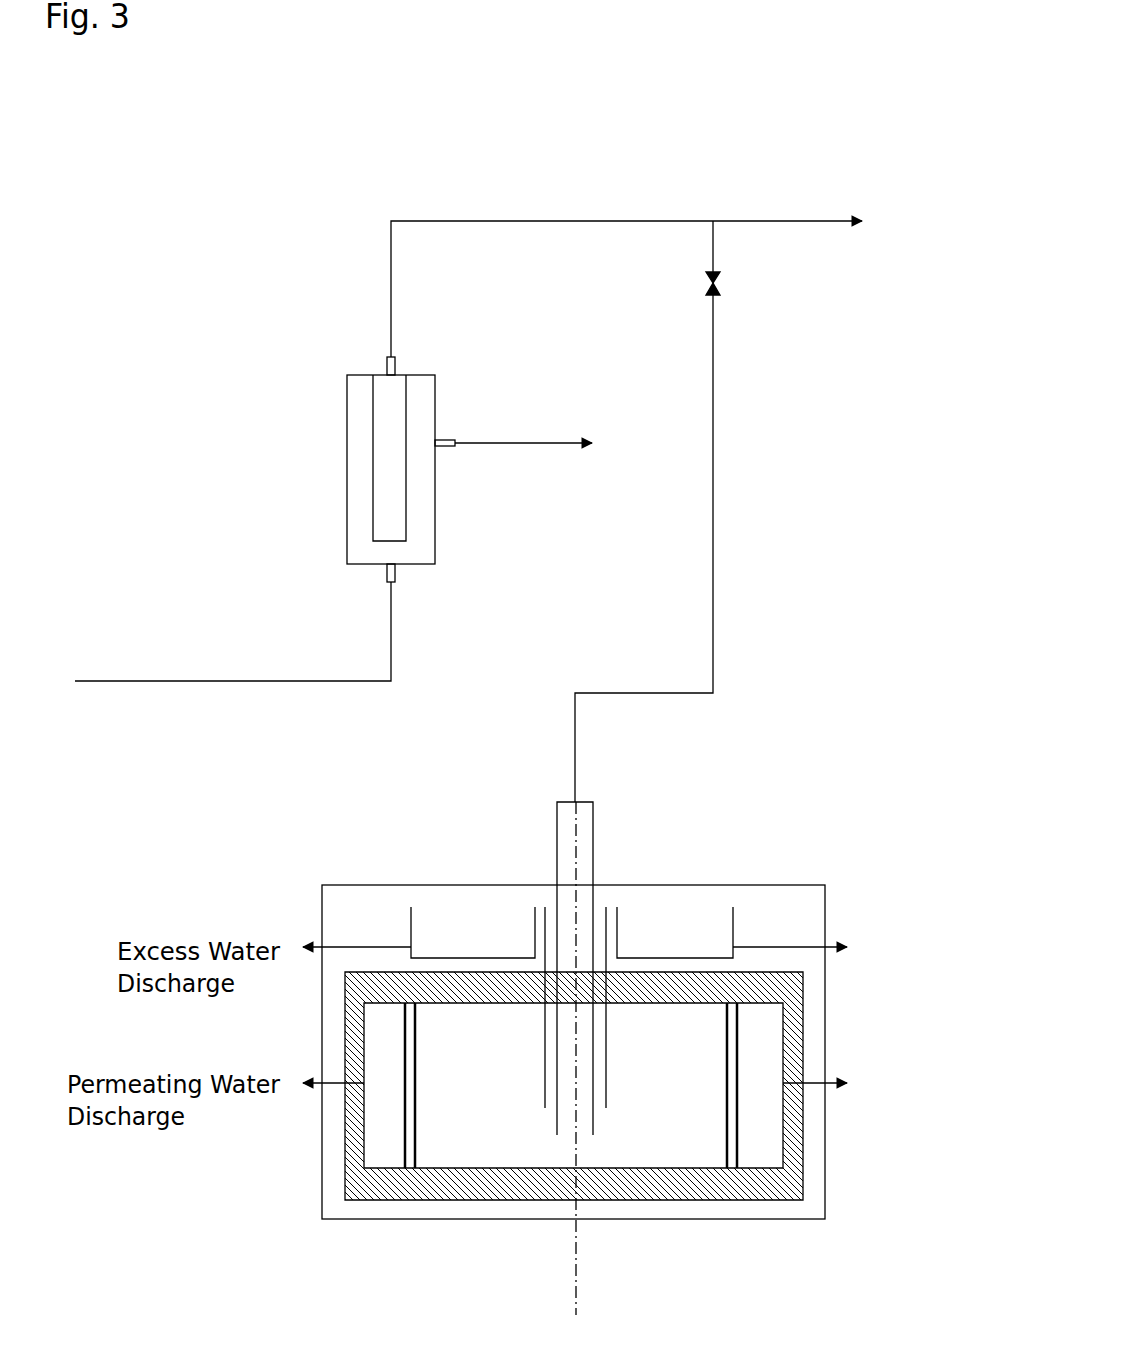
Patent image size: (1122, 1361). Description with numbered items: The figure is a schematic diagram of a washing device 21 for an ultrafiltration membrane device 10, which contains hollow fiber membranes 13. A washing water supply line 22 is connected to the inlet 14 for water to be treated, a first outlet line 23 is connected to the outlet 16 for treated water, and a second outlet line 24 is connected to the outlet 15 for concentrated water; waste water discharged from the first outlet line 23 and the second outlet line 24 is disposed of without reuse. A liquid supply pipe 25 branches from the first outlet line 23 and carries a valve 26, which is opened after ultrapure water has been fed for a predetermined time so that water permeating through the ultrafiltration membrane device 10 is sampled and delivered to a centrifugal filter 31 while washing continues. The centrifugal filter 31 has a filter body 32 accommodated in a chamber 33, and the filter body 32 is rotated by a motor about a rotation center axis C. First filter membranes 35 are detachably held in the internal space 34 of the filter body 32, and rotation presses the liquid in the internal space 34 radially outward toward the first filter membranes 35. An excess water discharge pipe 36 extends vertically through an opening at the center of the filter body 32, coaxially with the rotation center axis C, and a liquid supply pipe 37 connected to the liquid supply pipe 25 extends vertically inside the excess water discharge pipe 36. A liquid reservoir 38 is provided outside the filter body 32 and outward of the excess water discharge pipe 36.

The ultrafiltration membrane device 10 is at (353, 466).
The hollow fiber membrane 13 is at (383, 405).
The inlet for water to be treated 14 is at (398, 578).
The outlet for concentrated water 15 is at (447, 447).
The outlet for treated water 16 is at (398, 366).
The washing device 21 is at (252, 310).
The washing water supply line 22 is at (265, 680).
The first outlet line 23 is at (565, 220).
The second outlet line 24 is at (516, 447).
The liquid supply pipe 25 is at (715, 372).
The valve 26 is at (718, 286).
The centrifugal filter 31 is at (746, 822).
The filter body 32 is at (804, 1170).
The chamber 33 is at (826, 1001).
The internal space 34 is at (514, 1126).
The first filter membrane 35 is at (416, 1035).
The excess water discharge pipe 36 is at (543, 908).
The liquid supply pipe 37 is at (595, 808).
The liquid reservoir 38 is at (410, 920).
The rotation center axis C is at (578, 1279).